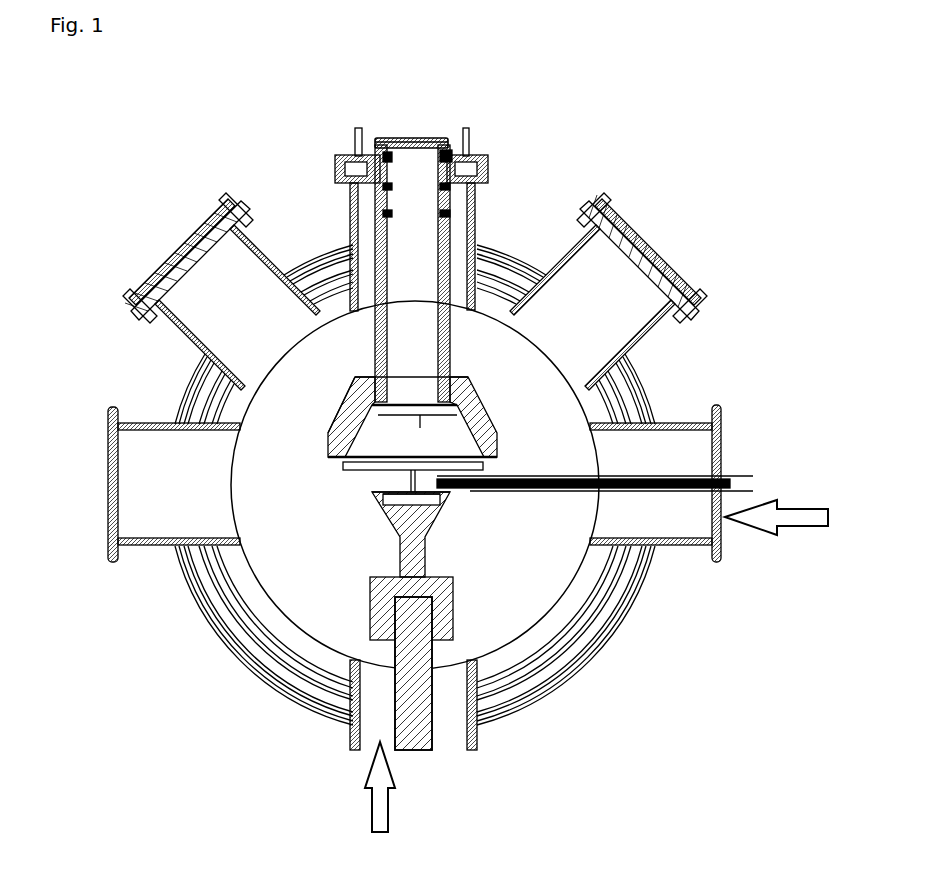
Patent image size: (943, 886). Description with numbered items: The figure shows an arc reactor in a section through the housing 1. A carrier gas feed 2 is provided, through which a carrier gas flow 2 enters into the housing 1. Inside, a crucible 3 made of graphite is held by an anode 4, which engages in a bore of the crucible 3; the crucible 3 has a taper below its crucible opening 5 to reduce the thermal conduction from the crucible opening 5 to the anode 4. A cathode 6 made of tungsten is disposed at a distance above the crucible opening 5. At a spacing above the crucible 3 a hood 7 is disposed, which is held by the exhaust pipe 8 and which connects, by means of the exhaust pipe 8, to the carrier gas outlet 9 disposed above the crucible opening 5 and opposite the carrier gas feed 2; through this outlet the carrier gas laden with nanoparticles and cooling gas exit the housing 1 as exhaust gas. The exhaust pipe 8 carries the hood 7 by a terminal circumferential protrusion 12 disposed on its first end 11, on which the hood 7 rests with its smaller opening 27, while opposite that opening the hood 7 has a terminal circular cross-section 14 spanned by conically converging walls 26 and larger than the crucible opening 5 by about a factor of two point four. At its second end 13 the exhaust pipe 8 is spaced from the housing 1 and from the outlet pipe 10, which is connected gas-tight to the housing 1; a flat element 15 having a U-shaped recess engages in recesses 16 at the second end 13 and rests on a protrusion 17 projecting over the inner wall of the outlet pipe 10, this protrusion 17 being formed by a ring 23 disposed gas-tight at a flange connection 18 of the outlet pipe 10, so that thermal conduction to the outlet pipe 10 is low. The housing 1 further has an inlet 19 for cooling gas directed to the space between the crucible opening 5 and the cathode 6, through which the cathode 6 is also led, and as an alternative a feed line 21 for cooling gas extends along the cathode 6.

The housing 1 is at (408, 495).
The carrier gas feed 2 is at (384, 781).
The crucible 3 is at (387, 510).
The anode 4 is at (433, 745).
The crucible opening 5 is at (398, 512).
The cathode 6 is at (462, 476).
The hood 7 is at (420, 428).
The exhaust pipe 8 is at (453, 247).
The carrier gas outlet 9 is at (410, 137).
The outlet pipe 10 is at (485, 210).
The first end 11 is at (414, 402).
The terminal circumferential protrusion 12 is at (373, 383).
The second end 13 is at (424, 137).
The terminal circular cross-section 14 is at (343, 448).
The flat element 15 is at (373, 152).
The recesses 16 is at (394, 186).
The protrusion 17 is at (363, 168).
The flange connection 18 is at (395, 212).
The inlet for cooling gas 19 is at (757, 478).
The feed line for cooling gas 21 is at (670, 476).
The ring 23 is at (361, 176).
The walls 26 is at (340, 400).
The smaller opening 27 is at (404, 483).